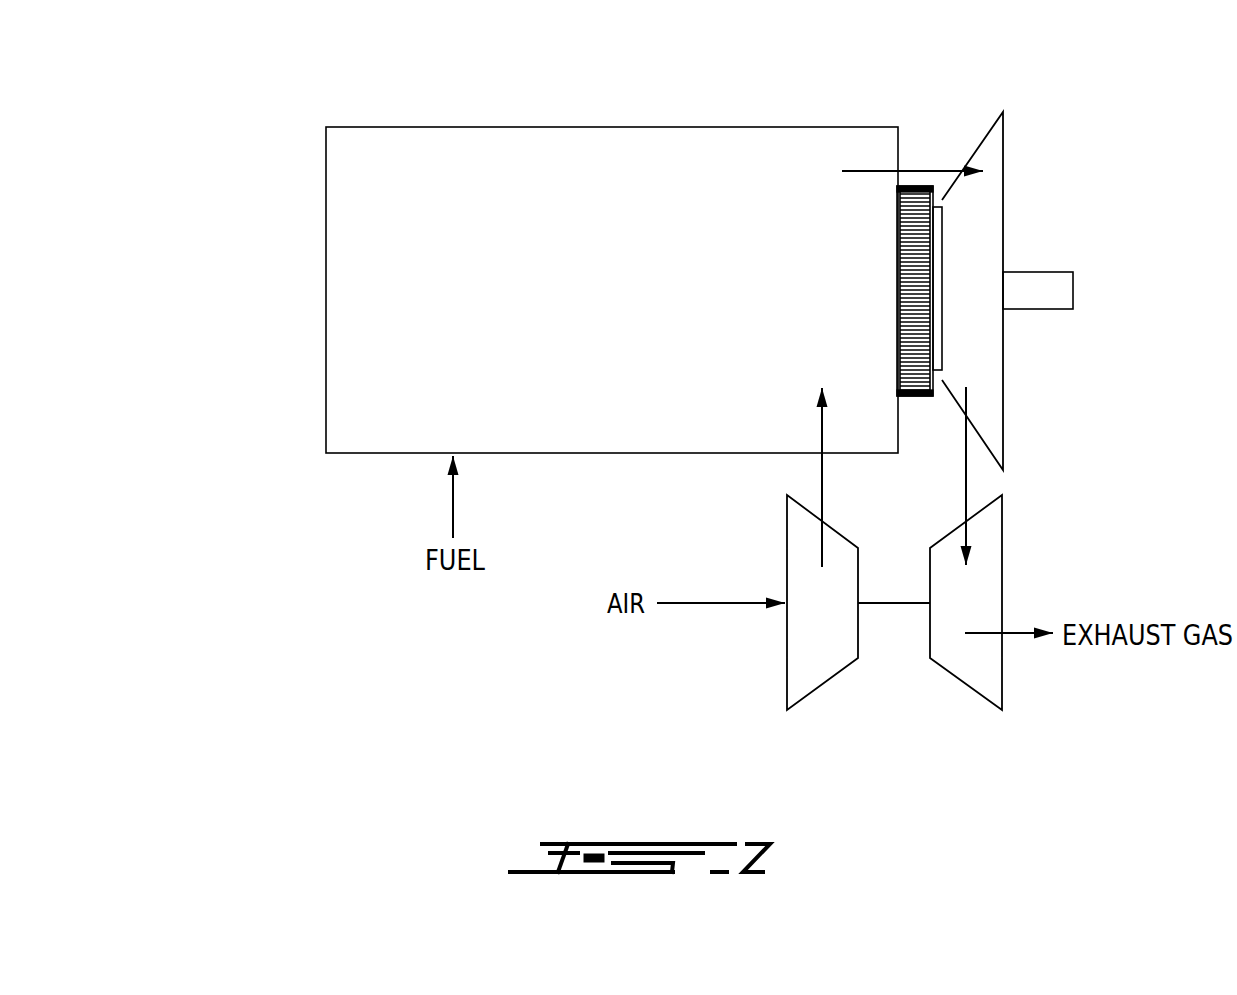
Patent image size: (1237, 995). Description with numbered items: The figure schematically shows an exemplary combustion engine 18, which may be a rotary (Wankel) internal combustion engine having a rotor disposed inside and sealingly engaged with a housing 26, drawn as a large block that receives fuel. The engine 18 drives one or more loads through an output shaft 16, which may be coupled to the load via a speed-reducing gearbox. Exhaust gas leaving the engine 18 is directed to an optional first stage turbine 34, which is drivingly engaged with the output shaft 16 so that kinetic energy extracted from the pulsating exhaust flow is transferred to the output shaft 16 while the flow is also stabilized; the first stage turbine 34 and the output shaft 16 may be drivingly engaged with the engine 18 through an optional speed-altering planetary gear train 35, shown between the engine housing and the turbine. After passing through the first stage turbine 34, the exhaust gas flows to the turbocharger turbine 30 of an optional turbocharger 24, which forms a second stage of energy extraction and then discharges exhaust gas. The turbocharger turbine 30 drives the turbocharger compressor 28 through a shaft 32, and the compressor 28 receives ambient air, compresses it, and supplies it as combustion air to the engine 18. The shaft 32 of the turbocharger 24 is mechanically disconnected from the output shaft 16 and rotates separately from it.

The combustion engine 18 is at (243, 190).
The housing 26 is at (495, 173).
The gear train 35 is at (913, 257).
The first stage turbine 34 is at (988, 263).
The output shaft 16 is at (1047, 290).
The turbocharger 24 is at (898, 688).
The turbocharger compressor 28 is at (785, 647).
The turbocharger turbine 30 is at (975, 605).
The shaft 32 is at (888, 603).